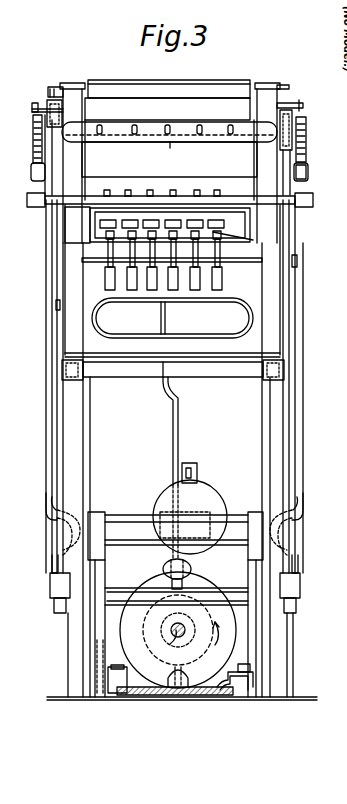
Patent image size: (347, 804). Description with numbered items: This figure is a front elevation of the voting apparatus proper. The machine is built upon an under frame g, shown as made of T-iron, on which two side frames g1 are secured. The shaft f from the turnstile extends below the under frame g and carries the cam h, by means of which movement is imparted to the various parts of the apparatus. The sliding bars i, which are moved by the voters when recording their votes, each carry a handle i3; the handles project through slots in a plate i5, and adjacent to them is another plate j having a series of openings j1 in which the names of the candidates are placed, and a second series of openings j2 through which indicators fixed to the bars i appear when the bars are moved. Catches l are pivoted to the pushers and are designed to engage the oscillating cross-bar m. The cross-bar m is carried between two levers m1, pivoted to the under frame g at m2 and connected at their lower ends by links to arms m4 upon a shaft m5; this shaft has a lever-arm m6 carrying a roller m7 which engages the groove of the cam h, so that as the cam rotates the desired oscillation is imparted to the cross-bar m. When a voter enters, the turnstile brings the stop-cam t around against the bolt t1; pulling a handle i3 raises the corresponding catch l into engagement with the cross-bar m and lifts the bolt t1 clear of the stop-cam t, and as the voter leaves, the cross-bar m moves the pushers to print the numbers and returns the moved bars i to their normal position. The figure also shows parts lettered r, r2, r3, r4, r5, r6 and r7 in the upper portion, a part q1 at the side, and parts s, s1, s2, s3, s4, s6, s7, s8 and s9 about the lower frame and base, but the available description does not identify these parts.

The shaft r is at (31, 174).
The crossbar r2 is at (122, 176).
The bar r3 is at (178, 150).
The stop r4 is at (297, 264).
The nut r5 is at (306, 170).
The rod r6 is at (288, 91).
The rod r7 is at (303, 106).
The side frames g1 is at (75, 155).
The under frame g is at (83, 446).
The sliding bars i is at (173, 290).
The handle i3 is at (198, 250).
The plate i5 is at (90, 262).
The plate j is at (98, 216).
The openings j1 is at (224, 222).
The second series of openings j2 is at (216, 236).
The catches l is at (210, 174).
The oscillating cross-bar m is at (244, 178).
The levers m1 is at (52, 326).
The pivot m2 is at (52, 392).
The arms m4 is at (50, 575).
The shaft m5 is at (135, 512).
The lever-arm m6 is at (163, 565).
The roller m7 is at (170, 584).
The stop q1 is at (56, 305).
The base s is at (206, 695).
The bearing s1 is at (113, 695).
The bearing s2 is at (172, 695).
The bracket s3 is at (248, 672).
The frame s4 is at (246, 573).
The hook s6 is at (46, 520).
The rail s7 is at (46, 425).
The block s8 is at (198, 472).
The disk s9 is at (216, 500).
The stop-cam t is at (190, 630).
The bolt t1 is at (179, 432).
The cam h is at (148, 640).
The shaft f is at (178, 640).